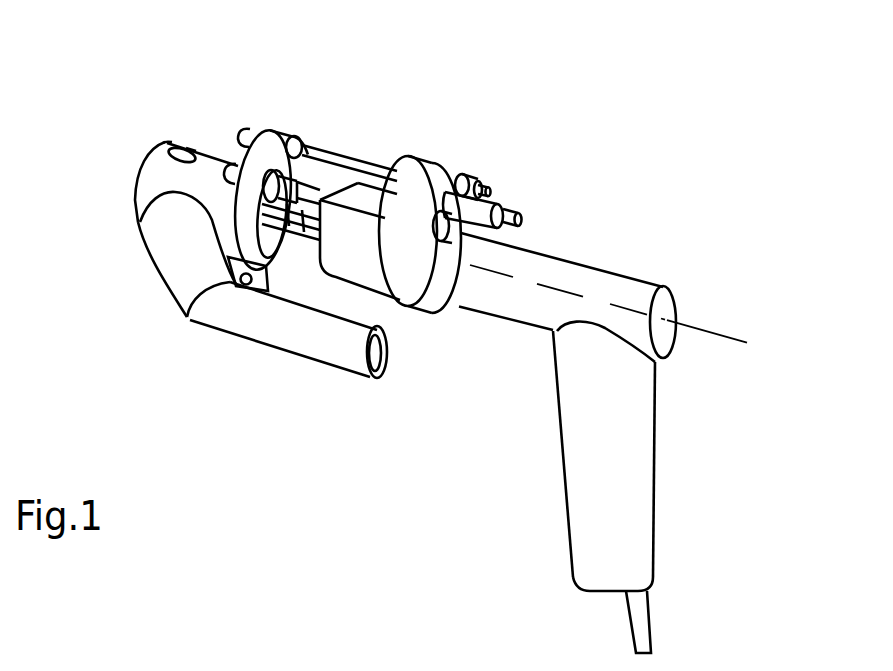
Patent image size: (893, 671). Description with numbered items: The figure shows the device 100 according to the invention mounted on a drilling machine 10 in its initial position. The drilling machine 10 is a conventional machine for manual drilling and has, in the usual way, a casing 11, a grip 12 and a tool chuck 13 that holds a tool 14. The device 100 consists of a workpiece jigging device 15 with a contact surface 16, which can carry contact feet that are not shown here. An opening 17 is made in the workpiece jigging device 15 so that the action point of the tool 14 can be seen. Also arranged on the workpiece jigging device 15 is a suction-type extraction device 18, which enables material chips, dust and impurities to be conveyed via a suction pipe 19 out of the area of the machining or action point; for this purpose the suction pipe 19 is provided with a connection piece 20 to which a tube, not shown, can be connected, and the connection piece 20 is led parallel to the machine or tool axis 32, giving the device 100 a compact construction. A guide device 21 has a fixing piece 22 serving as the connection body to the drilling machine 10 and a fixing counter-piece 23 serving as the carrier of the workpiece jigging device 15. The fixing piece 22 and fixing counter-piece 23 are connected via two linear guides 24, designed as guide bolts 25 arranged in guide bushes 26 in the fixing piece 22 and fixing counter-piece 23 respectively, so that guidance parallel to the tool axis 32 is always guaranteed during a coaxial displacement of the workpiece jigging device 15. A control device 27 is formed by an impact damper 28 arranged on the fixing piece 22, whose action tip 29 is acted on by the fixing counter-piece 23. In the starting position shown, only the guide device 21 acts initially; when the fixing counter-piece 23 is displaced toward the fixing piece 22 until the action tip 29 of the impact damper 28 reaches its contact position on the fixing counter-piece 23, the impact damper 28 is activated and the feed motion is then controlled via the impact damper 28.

The drilling machine 10 is at (632, 267).
The casing 11 is at (537, 260).
The grip 12 is at (637, 517).
The tool chuck 13 is at (383, 370).
The tool 14 is at (308, 215).
The workpiece jigging device 15 is at (190, 133).
The contact surface 16 is at (133, 180).
The opening 17 is at (168, 147).
The suction-type extraction device 18 is at (130, 267).
The suction pipe 19 is at (180, 263).
The connection piece 20 is at (247, 327).
The guide device 21 is at (372, 155).
The fixing piece 22 is at (423, 162).
The fixing counter-piece 23 is at (273, 130).
The linear guides 24 is at (310, 187).
The guide bolts 25 is at (328, 196).
The guide bushes 26 is at (250, 128).
The control device 27 is at (520, 213).
The impact damper 28 is at (480, 213).
The action tip 29 is at (319, 252).
The tool or machine axis 32 is at (720, 333).
The device 100 is at (353, 100).